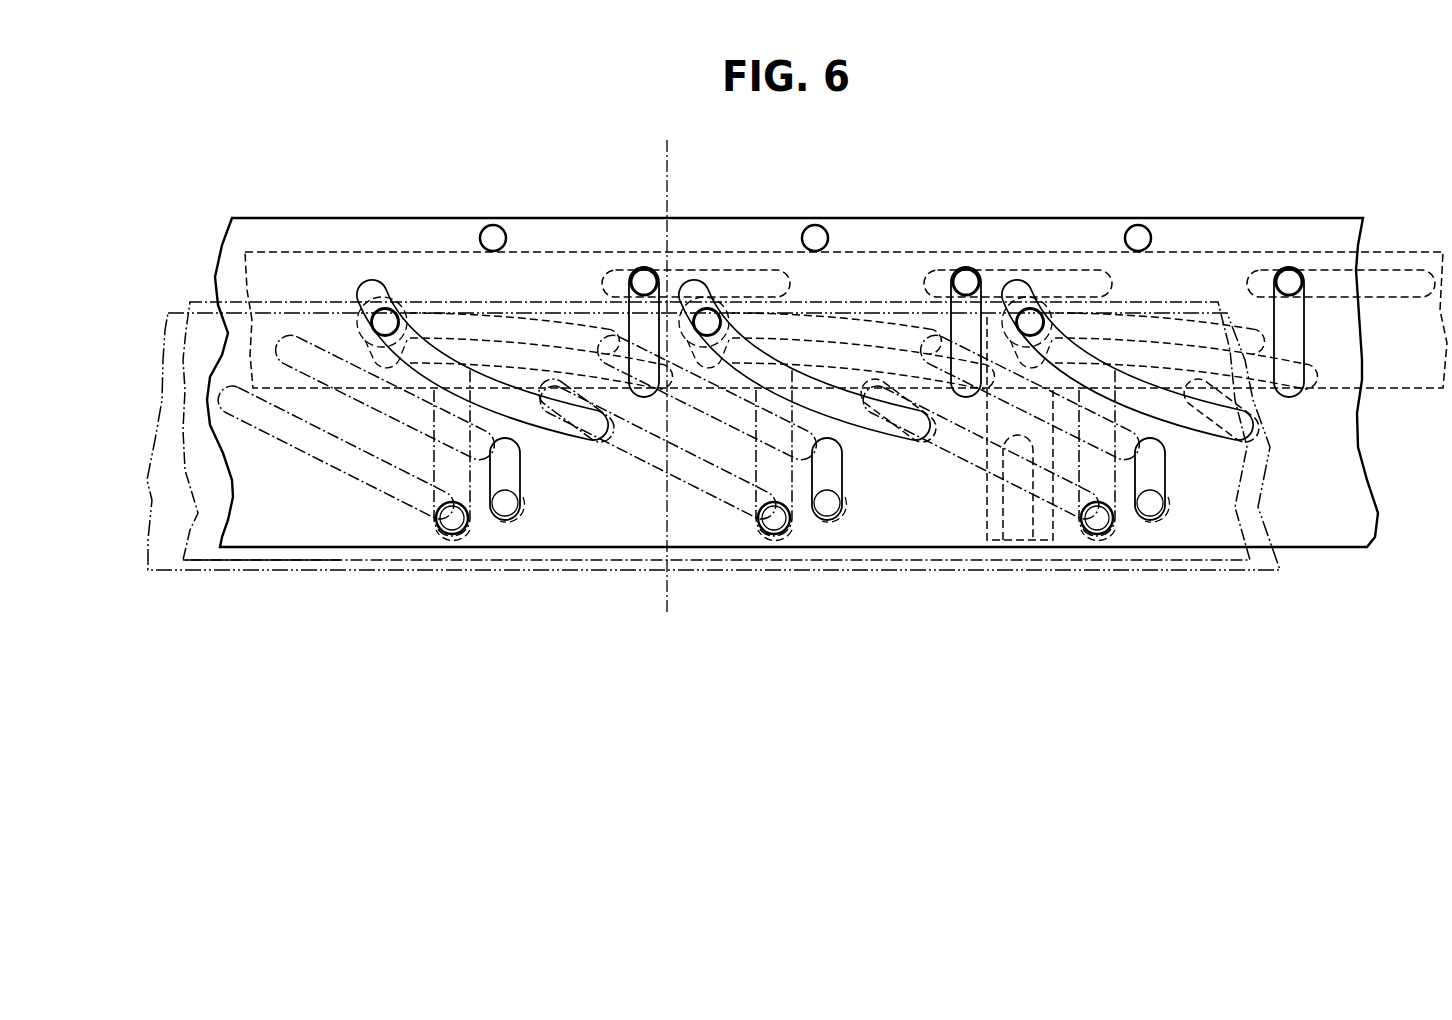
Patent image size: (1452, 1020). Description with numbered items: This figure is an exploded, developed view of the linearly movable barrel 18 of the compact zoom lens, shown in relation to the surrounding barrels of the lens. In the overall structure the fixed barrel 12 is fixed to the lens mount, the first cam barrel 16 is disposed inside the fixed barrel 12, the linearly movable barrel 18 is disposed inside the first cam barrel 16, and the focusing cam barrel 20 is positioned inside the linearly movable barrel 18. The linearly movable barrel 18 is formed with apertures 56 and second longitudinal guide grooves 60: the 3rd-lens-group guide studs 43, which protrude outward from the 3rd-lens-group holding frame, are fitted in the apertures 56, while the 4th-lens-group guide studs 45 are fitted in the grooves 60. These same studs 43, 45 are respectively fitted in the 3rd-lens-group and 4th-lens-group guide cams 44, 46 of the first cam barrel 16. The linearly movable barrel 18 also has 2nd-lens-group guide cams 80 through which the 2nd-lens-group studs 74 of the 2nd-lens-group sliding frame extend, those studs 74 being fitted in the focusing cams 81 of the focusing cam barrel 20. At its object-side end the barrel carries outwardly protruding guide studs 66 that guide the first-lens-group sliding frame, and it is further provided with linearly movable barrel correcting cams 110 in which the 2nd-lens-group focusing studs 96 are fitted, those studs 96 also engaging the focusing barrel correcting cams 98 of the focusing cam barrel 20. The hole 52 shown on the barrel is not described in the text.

The fixed barrel 12 is at (150, 570).
The first cam barrel 16 is at (183, 560).
The linearly movable barrel 18 is at (1327, 520).
The focusing cam barrel 20 is at (985, 540).
The 3rd-lens-group guide studs 43 is at (778, 522).
The 3rd-lens-group guide cam 44 is at (709, 487).
The 4th-lens-group guide studs 45 is at (845, 513).
The 4th-lens-group guide cam 46 is at (749, 440).
The hole 52 is at (436, 490).
The apertures 56 is at (790, 522).
The second longitudinal guide grooves 60 is at (837, 510).
The guide studs 66 is at (1142, 235).
The 2nd-lens-group studs 74 is at (703, 337).
The 2nd-lens-group guide cams 80 is at (835, 390).
The focusing cams 81 is at (900, 326).
The 2nd-lens-group focusing studs 96 is at (1293, 258).
The focusing barrel correcting cams 98 is at (1402, 266).
The linearly movable barrel correcting cams 110 is at (1295, 318).